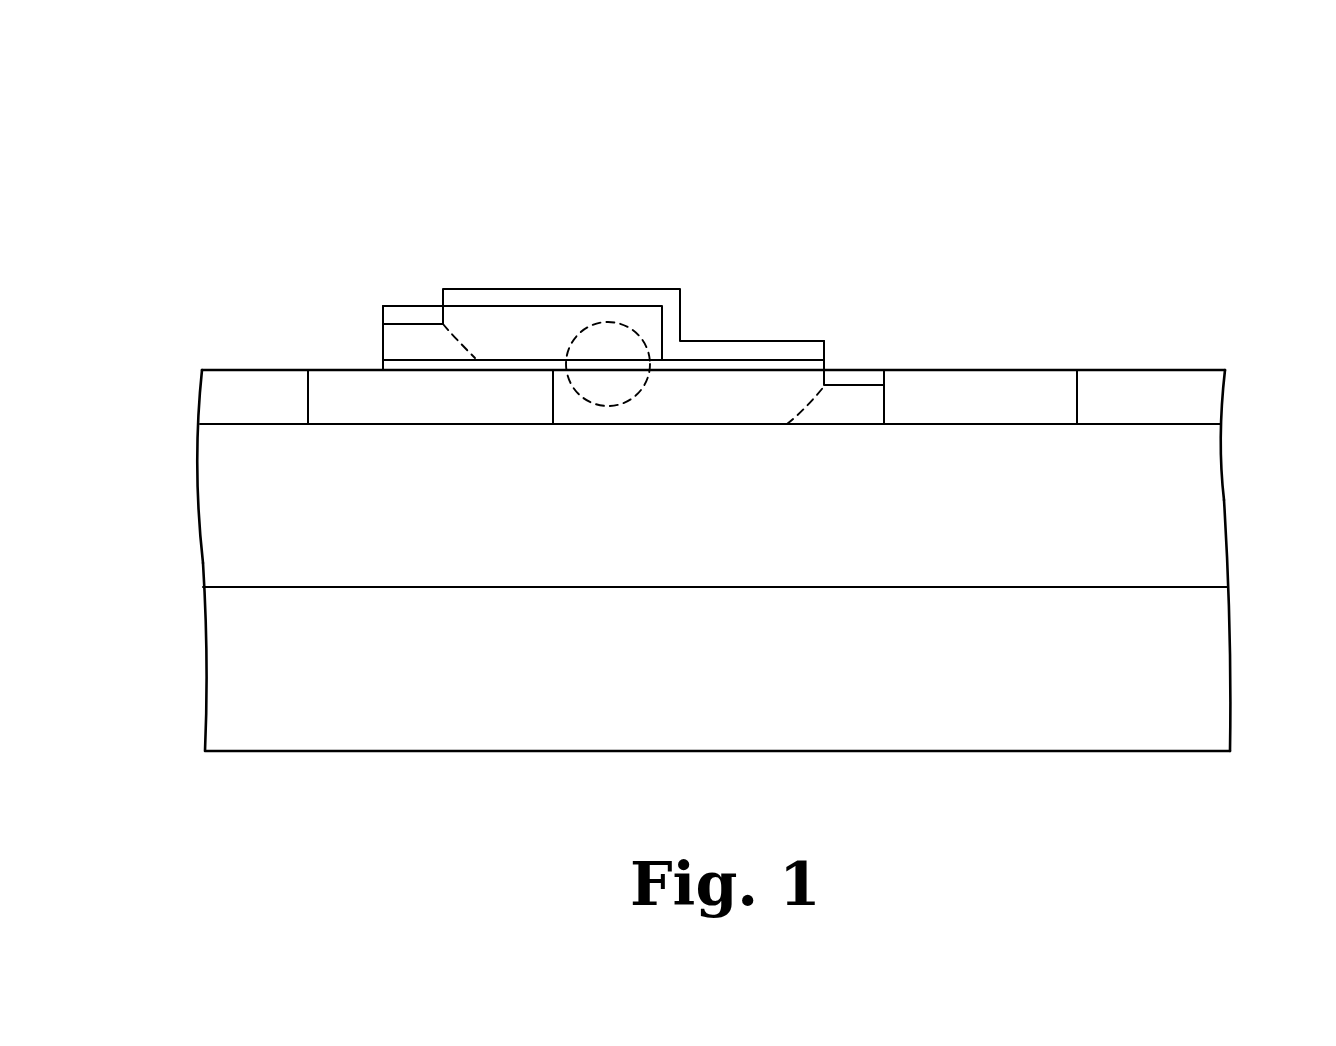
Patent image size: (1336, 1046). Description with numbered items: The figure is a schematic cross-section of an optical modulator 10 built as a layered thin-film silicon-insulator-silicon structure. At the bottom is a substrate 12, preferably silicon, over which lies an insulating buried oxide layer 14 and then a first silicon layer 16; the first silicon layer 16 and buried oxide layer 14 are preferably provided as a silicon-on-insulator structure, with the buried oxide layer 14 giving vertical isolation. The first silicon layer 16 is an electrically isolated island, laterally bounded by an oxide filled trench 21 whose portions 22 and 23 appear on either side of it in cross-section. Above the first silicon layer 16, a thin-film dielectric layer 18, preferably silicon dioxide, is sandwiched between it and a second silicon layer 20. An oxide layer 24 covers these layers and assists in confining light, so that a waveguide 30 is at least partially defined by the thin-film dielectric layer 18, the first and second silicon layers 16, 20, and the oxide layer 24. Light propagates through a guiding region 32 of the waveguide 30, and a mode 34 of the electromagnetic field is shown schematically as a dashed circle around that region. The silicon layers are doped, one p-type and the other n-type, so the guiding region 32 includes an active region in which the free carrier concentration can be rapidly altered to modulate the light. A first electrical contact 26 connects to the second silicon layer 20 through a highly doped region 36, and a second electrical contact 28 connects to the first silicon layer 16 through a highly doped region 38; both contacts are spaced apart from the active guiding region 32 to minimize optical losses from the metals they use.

The optical modulator 10 is at (765, 140).
The substrate 12 is at (667, 713).
The buried oxide layer 14 is at (1193, 495).
The first silicon layer 16 is at (750, 392).
The thin-film dielectric layer 18 is at (610, 363).
The second silicon layer 20 is at (493, 320).
The oxide filled trench 21 is at (1045, 370).
The trench portion 22 is at (350, 383).
The trench portion 23 is at (968, 392).
The oxide layer 24 is at (578, 297).
The first electrical contact 26 is at (398, 318).
The second electrical contact 28 is at (852, 375).
The waveguide 30 is at (558, 127).
The guiding region 32 is at (637, 335).
The mode 34 is at (590, 344).
The highly doped region 36 is at (417, 343).
The highly doped region 38 is at (857, 403).